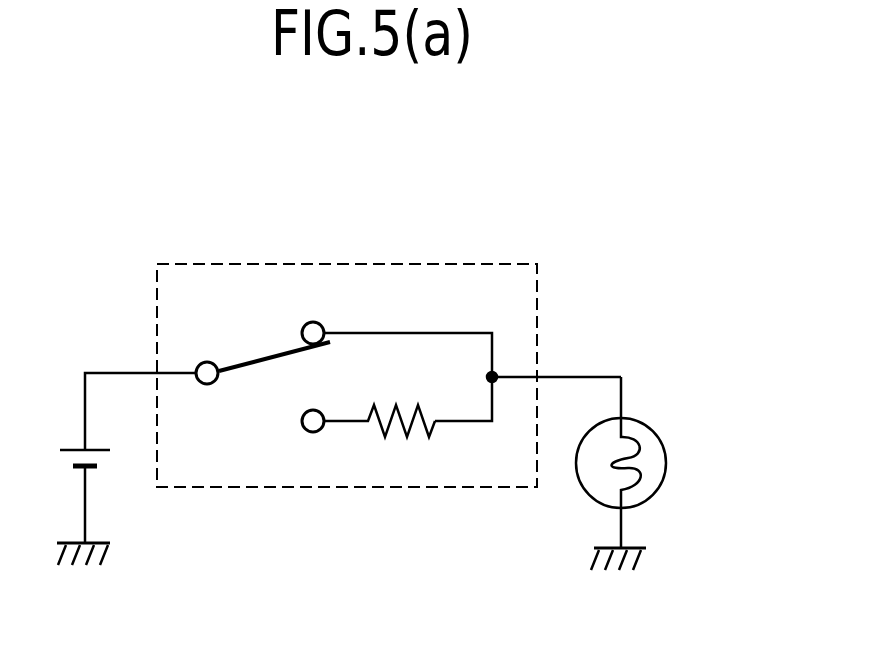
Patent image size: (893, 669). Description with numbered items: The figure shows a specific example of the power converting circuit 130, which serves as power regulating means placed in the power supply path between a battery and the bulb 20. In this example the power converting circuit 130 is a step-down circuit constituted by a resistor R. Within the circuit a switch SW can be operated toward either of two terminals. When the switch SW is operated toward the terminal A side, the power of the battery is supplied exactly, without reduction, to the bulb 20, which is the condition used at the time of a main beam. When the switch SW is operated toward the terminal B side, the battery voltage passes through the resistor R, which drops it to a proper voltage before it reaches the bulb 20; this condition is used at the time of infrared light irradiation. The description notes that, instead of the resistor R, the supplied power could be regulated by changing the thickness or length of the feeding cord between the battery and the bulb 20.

The power converting circuit 130 is at (389, 319).
The bulb 20 is at (666, 463).
The switch SW is at (263, 377).
The terminal A is at (314, 313).
The terminal B is at (313, 444).
The resistor R is at (379, 441).